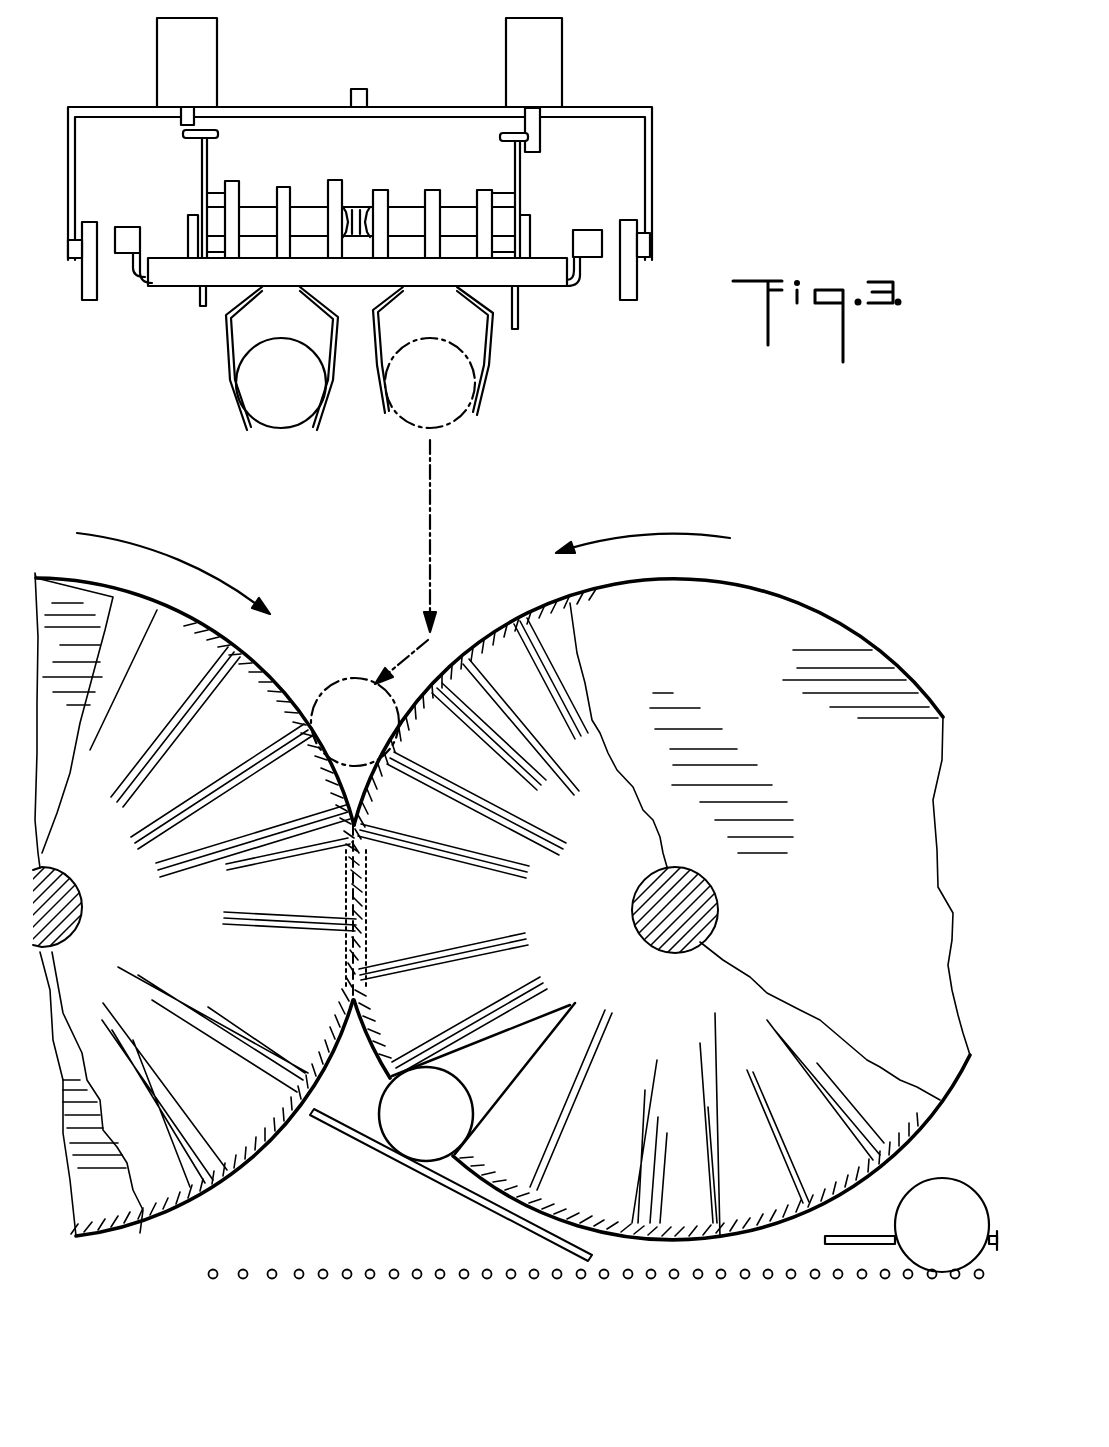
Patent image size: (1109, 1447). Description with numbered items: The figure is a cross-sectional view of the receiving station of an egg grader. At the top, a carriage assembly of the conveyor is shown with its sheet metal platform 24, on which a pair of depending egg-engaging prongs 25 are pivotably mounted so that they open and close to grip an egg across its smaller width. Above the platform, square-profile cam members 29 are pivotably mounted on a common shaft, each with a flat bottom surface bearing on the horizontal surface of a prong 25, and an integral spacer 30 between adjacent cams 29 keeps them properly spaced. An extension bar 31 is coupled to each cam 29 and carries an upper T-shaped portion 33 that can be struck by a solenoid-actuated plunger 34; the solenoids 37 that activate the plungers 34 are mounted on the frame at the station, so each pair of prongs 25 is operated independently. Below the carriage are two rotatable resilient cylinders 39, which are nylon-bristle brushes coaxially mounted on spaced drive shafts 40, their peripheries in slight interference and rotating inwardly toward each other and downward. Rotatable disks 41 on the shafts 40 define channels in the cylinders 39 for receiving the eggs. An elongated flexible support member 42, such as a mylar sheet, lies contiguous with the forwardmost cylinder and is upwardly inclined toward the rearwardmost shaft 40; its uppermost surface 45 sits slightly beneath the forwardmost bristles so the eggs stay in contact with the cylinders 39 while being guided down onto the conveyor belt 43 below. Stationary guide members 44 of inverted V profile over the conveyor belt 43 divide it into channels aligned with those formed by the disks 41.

The sheet metal platform 24 is at (545, 285).
The egg-engaging prongs 25 is at (330, 365).
The cam members 29 is at (233, 181).
The integral spacer 30 is at (285, 187).
The extension bar 31 is at (200, 172).
The T-shaped portion 33 is at (218, 134).
The solenoid-actuated plunger 34 is at (180, 124).
The solenoids 37 is at (217, 18).
The rotatable resilient cylinders 39 is at (558, 668).
The drive shafts 40 is at (73, 910).
The rotatable disks 41 is at (825, 625).
The elongated flexible support member 42 is at (346, 1132).
The conveyor belt 43 is at (274, 1271).
The stationary guide members 44 is at (852, 1238).
The uppermost surface 45 is at (452, 1172).